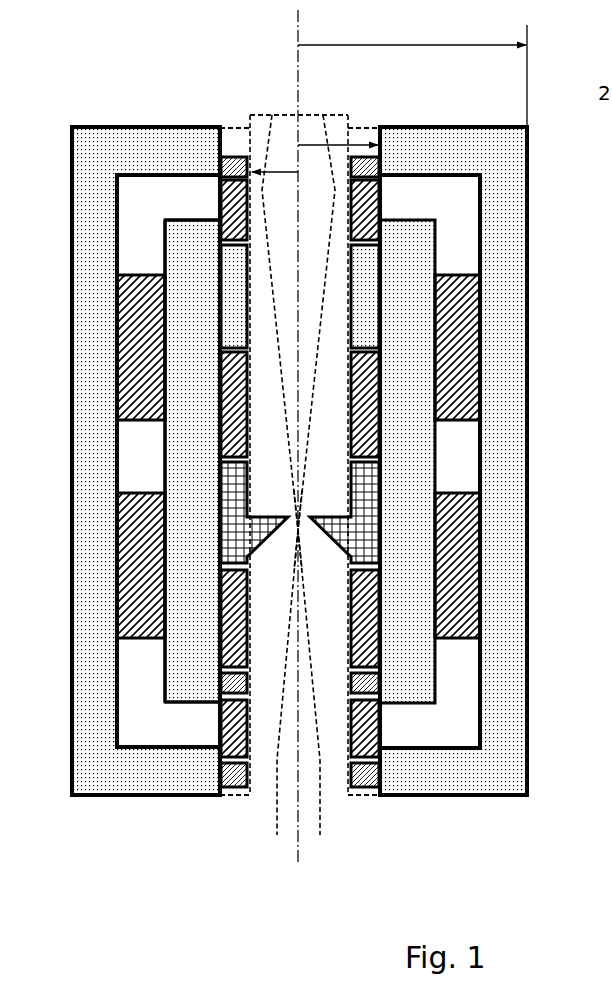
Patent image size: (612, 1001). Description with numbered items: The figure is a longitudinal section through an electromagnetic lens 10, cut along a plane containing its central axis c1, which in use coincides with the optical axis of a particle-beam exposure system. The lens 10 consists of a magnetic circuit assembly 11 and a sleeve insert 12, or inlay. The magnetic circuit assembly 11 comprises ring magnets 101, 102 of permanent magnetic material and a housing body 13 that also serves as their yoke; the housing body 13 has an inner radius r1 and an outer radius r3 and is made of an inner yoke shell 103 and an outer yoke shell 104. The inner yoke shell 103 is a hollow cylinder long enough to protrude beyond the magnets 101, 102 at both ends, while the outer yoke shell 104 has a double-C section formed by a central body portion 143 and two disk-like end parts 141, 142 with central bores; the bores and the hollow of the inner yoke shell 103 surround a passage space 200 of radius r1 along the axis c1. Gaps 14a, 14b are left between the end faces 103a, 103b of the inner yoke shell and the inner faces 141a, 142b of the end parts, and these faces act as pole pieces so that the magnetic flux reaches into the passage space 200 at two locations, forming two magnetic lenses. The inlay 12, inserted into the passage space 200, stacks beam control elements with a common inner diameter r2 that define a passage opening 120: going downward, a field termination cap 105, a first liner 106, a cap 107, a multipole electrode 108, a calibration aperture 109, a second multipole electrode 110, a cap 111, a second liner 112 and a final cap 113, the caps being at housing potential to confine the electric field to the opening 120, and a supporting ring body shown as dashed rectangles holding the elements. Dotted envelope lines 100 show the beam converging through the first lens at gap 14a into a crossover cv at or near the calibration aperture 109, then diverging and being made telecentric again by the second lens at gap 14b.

The electromagnetic lens 10 is at (77, 868).
The magnetic circuit assembly 11 is at (118, 815).
The sleeve insert 12 is at (357, 804).
The housing body 13 is at (82, 468).
The upper gap 14a is at (212, 211).
The lower gap 14b is at (212, 735).
The dotted envelope lines 100 is at (277, 835).
The ring magnet 101 is at (445, 387).
The ring magnet 102 is at (445, 597).
The inner yoke shell 103 is at (215, 125).
The upper end face of inner yoke shell 103a is at (152, 225).
The lower end face of inner yoke shell 103b is at (150, 718).
The outer yoke shell 104 is at (93, 125).
The field termination cap 105 is at (385, 165).
The first liner 106 is at (400, 195).
The field termination cap 107 is at (382, 270).
The multipole electrode 108 is at (390, 432).
The calibration aperture 109 is at (385, 488).
The multipole electrode 110 is at (385, 645).
The field termination cap 111 is at (385, 690).
The second liner 112 is at (385, 735).
The field termination cap 113 is at (385, 770).
The passage opening 120 is at (290, 113).
The upper end part 141 is at (148, 138).
The inner face of upper end part 141a is at (178, 180).
The lower end part 142 is at (157, 790).
The inner face of lower end part 142b is at (164, 745).
The central body portion 143 is at (92, 652).
The passage space 200 is at (382, 105).
The inner radius r1 is at (338, 132).
The common inner diameter r2 is at (275, 160).
The outer radius r3 is at (412, 70).
The central axis c1 is at (299, 447).
The crossover cv is at (304, 532).